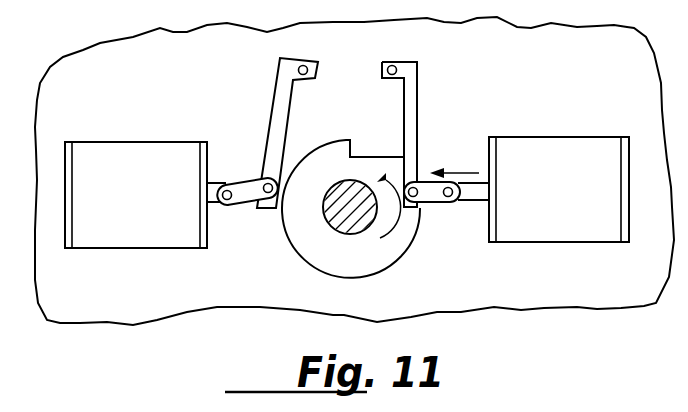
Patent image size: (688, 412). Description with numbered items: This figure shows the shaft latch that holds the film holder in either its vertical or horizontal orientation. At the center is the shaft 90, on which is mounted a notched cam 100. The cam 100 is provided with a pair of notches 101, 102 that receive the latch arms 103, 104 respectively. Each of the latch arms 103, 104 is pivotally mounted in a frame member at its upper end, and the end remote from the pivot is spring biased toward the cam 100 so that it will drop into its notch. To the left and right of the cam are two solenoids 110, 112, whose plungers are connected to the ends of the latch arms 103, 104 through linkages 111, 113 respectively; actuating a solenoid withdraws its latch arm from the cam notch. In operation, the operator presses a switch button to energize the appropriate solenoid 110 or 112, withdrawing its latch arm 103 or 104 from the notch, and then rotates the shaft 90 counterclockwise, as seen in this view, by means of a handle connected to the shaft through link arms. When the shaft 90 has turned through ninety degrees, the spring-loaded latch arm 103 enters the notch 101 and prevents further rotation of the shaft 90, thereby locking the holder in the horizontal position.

The shaft 90 is at (340, 217).
The notched cam 100 is at (369, 260).
The notch 101 is at (354, 142).
The notch 102 is at (404, 173).
The latch arm 103 is at (278, 107).
The latch arm 104 is at (412, 98).
The solenoid 110 is at (128, 165).
The linkage 111 is at (250, 194).
The solenoid 112 is at (542, 157).
The linkage 113 is at (436, 196).